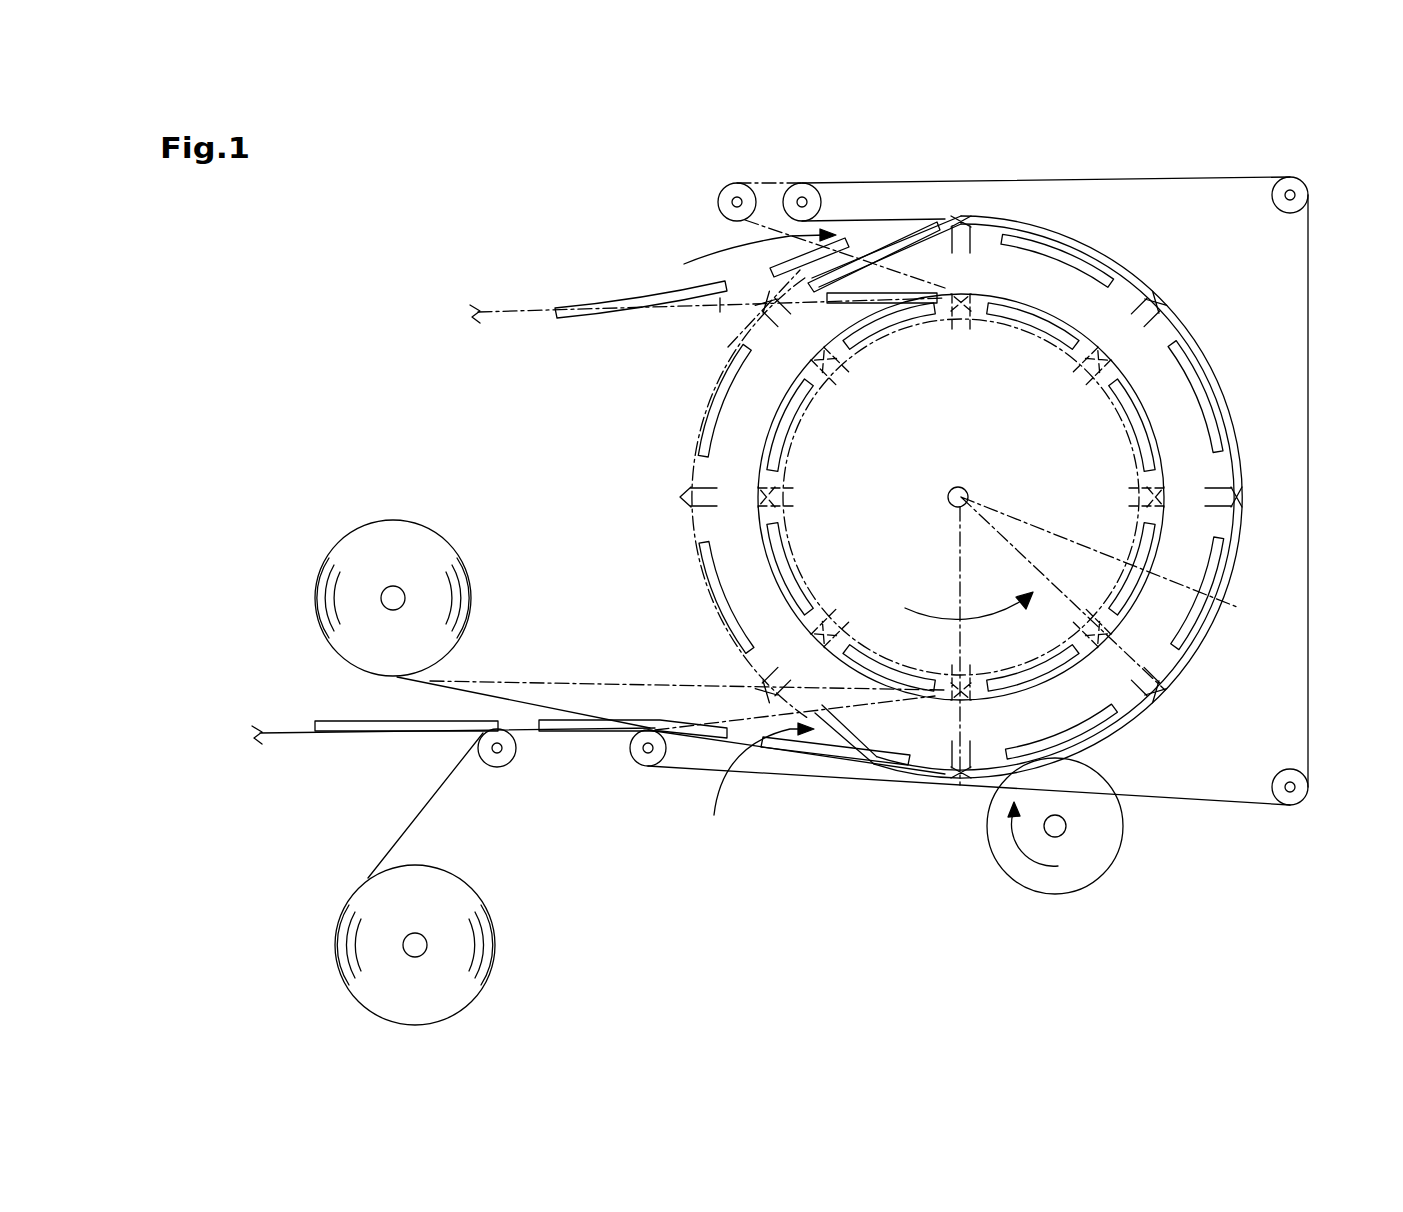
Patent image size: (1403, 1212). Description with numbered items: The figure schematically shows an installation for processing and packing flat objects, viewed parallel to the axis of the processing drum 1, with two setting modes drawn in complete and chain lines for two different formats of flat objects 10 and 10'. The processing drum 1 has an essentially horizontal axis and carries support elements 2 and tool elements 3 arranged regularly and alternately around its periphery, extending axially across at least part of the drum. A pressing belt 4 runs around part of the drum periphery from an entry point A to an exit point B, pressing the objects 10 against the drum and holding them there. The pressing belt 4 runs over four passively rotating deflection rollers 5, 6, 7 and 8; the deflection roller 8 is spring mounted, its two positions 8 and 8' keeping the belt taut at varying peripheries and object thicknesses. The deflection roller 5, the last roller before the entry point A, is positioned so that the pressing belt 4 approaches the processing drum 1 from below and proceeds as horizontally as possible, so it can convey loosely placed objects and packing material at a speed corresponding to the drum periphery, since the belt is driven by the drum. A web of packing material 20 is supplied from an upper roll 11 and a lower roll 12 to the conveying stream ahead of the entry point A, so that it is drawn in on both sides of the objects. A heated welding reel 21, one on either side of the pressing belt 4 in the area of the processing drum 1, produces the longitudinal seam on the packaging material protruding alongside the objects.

The processing drum 1 is at (630, 440).
The support elements 2 is at (716, 392).
The tool elements 3 is at (690, 498).
The pressing belt 4 is at (958, 178).
The deflection roller 5 is at (640, 764).
The deflection roller 6 is at (1305, 800).
The deflection roller 7 is at (1305, 183).
The deflection roller 8 is at (780, 166).
The deflection roller position 8' is at (801, 203).
The flat objects 10 is at (791, 520).
The flat objects 10' is at (961, 497).
The upper roll 11 is at (492, 940).
The lower roll 12 is at (372, 522).
The web of packing material 20 is at (437, 685).
The heated welding reel 21 is at (1100, 858).
The entry point A is at (751, 781).
The exit point B is at (707, 288).